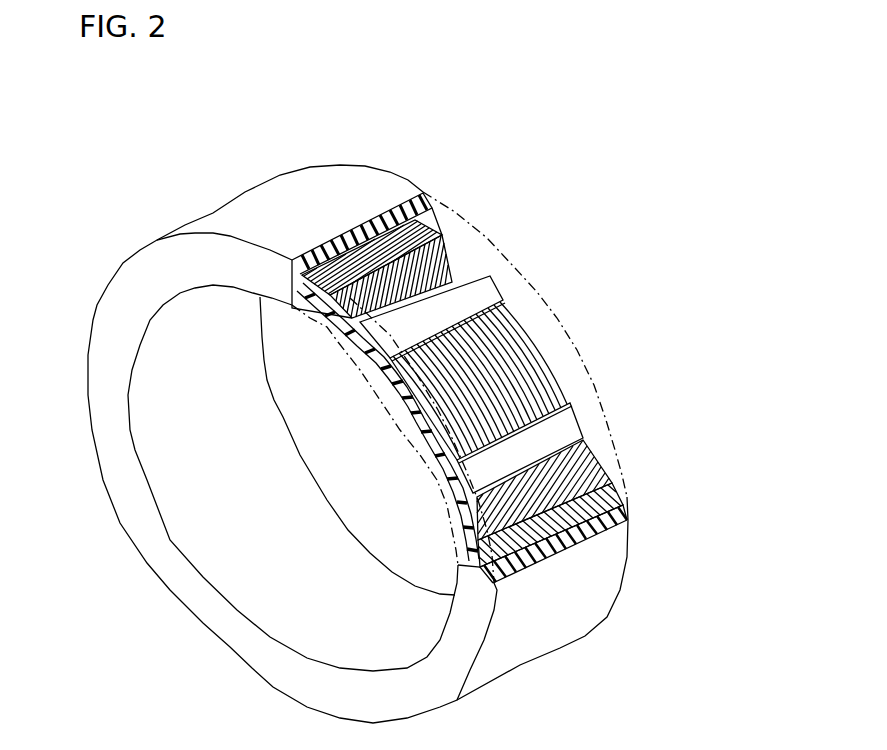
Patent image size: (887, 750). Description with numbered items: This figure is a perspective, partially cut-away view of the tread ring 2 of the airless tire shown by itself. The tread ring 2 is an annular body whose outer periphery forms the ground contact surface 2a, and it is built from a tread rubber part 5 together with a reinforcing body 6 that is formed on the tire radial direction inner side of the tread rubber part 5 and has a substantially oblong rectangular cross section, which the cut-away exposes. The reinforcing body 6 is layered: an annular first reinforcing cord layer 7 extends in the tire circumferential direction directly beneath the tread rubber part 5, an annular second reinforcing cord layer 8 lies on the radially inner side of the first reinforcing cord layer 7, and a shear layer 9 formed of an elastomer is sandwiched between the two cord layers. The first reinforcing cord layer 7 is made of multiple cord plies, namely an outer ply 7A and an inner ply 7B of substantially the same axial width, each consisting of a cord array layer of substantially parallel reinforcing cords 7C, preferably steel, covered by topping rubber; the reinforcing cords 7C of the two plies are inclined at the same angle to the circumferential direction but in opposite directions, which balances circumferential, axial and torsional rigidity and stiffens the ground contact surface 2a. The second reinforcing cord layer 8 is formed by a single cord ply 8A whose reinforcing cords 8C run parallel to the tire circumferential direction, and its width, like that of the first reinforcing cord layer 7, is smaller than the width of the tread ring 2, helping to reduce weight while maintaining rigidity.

The tread ring 2 is at (358, 399).
The ground contact surface 2a is at (305, 193).
The tread rubber part 5 is at (379, 224).
The reinforcing body 6 is at (551, 311).
The first reinforcing cord layer 7 is at (324, 352).
The outer ply 7A is at (422, 240).
The inner ply 7B is at (452, 265).
The reinforcing cords 7C is at (325, 252).
The second reinforcing cord layer 8 is at (564, 344).
The cord ply 8A is at (507, 353).
The reinforcing cords 8C is at (452, 387).
The shear layer 9 is at (480, 292).